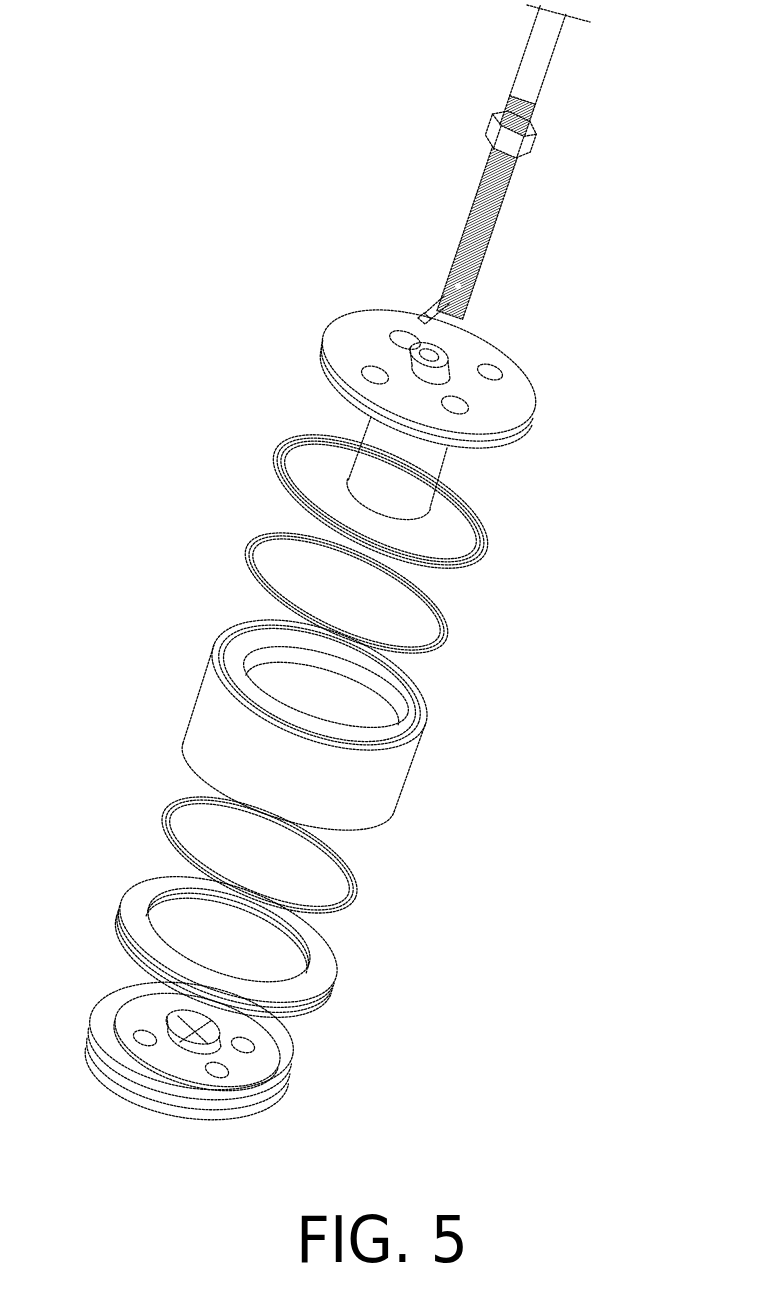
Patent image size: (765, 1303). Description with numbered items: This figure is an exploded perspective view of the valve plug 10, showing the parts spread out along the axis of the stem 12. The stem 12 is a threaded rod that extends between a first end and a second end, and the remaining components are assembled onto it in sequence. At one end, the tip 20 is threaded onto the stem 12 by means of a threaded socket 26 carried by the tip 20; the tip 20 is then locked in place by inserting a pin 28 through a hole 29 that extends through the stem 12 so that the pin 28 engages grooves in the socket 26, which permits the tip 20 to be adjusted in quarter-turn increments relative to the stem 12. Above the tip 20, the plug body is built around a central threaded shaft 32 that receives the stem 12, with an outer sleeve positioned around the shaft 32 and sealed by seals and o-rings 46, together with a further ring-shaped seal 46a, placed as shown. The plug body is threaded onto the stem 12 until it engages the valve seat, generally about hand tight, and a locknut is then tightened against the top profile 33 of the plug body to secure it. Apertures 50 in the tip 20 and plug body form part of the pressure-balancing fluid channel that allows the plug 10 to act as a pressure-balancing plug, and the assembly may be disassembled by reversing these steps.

The plug 10 is at (146, 213).
The stem 12 is at (482, 188).
The tip 20 is at (283, 1077).
The threaded socket 26 is at (218, 1038).
The pin 28 is at (430, 318).
The hole 29 is at (462, 290).
The central threaded shaft 32 is at (340, 333).
The top profile 33 is at (450, 377).
The seals 46 is at (487, 525).
The gasket ring 46a is at (355, 880).
The apertures 50 is at (365, 365).